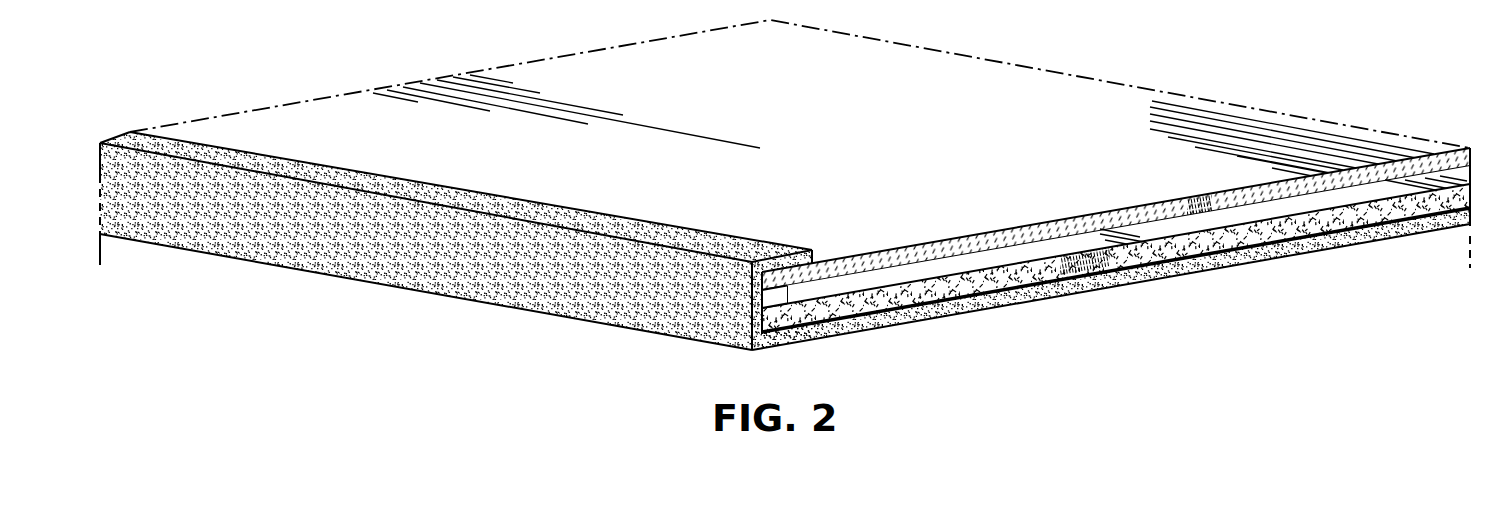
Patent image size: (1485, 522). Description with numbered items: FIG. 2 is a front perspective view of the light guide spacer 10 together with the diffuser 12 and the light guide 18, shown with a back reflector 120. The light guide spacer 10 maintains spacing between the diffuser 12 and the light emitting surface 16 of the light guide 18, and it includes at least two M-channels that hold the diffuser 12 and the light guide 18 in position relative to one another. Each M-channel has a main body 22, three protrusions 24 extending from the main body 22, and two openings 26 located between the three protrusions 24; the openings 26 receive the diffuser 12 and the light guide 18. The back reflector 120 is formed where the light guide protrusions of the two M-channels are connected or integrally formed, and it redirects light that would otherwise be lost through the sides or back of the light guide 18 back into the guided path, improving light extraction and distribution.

The light guide spacer 10 is at (333, 171).
The diffuser 12 is at (1043, 218).
The light emitting surface 16 is at (950, 270).
The light guide 18 is at (893, 295).
The main body 22 is at (433, 250).
The protrusions 24 is at (843, 308).
The openings 26 is at (787, 296).
The back reflector 120 is at (1150, 273).